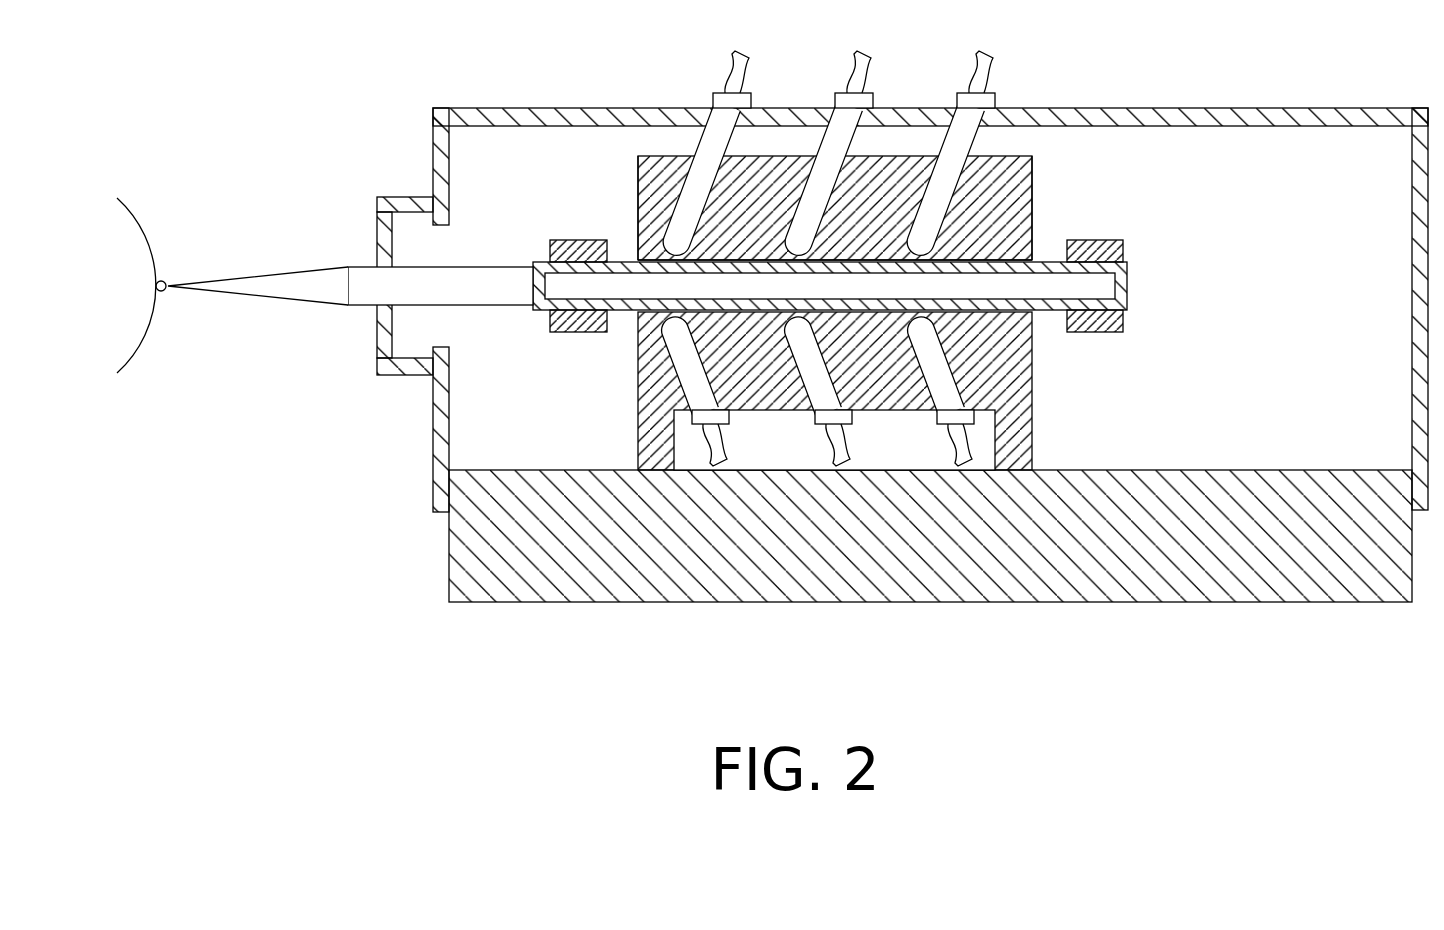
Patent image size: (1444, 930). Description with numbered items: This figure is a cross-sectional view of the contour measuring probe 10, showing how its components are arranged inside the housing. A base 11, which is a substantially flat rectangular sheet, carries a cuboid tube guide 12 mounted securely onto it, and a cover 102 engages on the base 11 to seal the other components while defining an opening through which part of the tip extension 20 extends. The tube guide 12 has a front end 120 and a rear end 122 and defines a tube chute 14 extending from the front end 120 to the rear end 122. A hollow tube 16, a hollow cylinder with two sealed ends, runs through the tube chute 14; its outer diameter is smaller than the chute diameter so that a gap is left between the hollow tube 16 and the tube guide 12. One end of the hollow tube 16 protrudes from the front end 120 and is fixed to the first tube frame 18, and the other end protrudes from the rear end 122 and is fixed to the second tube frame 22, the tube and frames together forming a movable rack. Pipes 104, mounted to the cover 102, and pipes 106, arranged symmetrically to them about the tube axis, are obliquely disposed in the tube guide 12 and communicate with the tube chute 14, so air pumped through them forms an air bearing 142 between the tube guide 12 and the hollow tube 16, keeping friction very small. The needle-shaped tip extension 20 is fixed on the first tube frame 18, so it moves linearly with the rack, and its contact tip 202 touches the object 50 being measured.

The contour measuring probe 10 is at (423, 72).
The base 11 is at (1156, 481).
The tube guide 12 is at (894, 187).
The tube chute 14 is at (1007, 313).
The hollow tube 16 is at (1127, 283).
The first tube frame 18 is at (577, 245).
The tip extension 20 is at (429, 285).
The second tube frame 22 is at (1097, 250).
The object 50 is at (147, 235).
The cover 102 is at (642, 106).
The pipe 104 is at (830, 168).
The pipe 106 is at (687, 357).
The front end 120 is at (637, 188).
The rear end 122 is at (1035, 195).
The air bearing 142 is at (990, 258).
The contact tip 202 is at (163, 282).